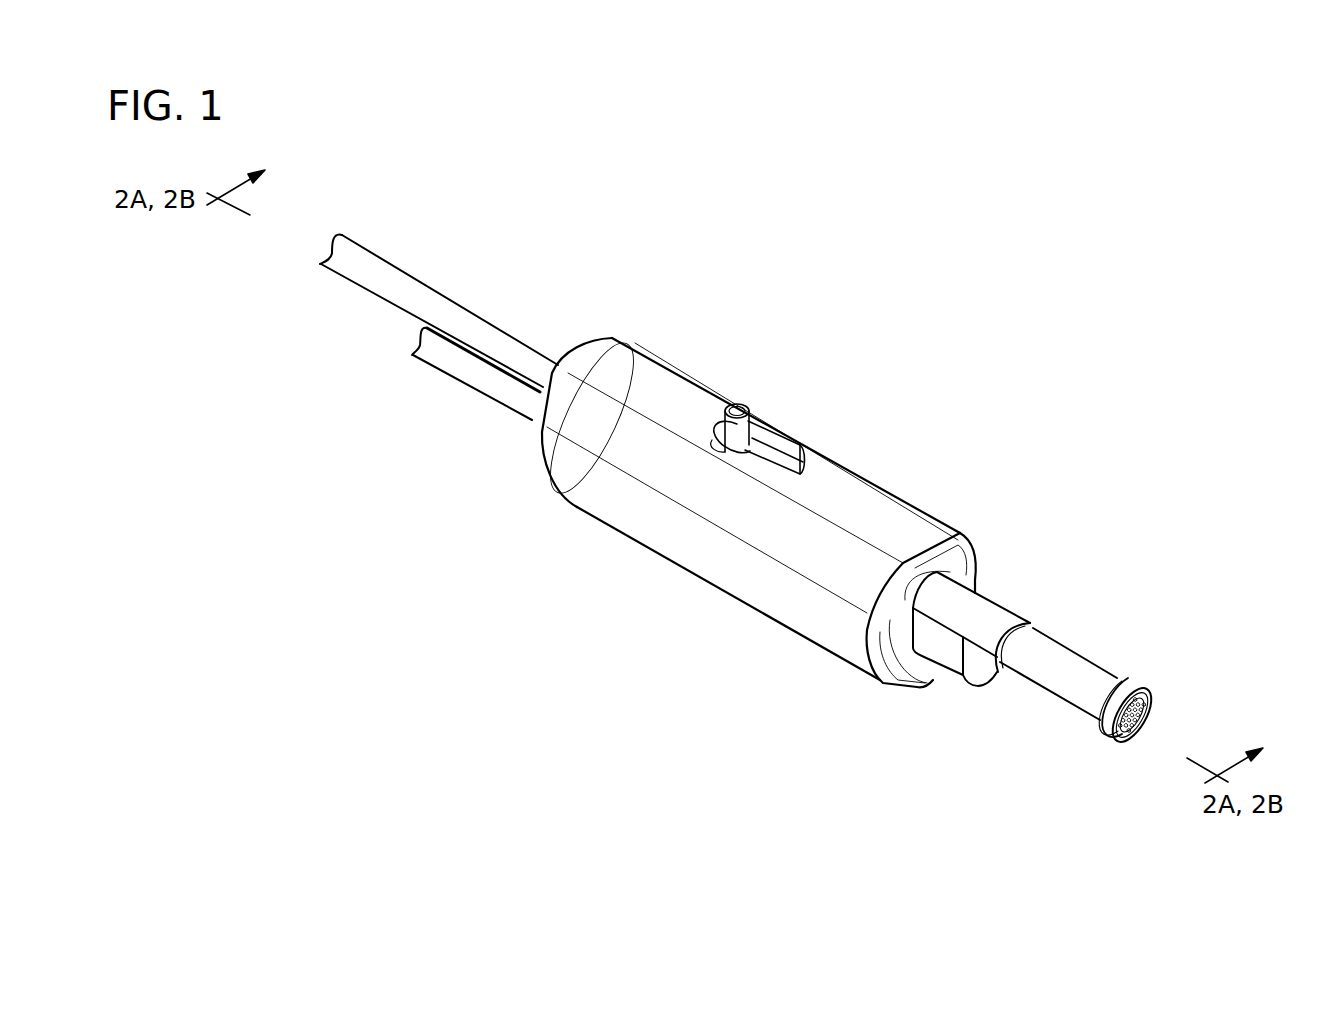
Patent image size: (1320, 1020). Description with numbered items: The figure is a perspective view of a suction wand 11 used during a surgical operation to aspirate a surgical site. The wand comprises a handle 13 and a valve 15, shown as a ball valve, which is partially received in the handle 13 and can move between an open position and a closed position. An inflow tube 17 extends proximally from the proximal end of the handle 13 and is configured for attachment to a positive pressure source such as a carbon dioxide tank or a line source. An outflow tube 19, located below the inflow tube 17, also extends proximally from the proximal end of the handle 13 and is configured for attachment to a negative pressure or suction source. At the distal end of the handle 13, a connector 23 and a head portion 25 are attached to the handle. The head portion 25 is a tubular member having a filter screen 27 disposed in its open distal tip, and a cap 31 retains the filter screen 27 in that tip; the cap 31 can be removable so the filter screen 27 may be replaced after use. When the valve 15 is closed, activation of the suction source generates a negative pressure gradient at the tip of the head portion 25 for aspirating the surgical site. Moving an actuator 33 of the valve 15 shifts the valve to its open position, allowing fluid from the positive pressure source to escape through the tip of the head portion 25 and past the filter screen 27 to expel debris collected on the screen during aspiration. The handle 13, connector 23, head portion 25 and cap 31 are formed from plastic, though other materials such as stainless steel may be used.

The suction wand 11 is at (986, 256).
The handle 13 is at (707, 552).
The valve 15 is at (754, 391).
The inflow tube 17 is at (463, 327).
The outflow tube 19 is at (465, 364).
The connector 23 is at (1014, 593).
The head portion 25 is at (1092, 641).
The filter screen 27 is at (1152, 717).
The cap 31 is at (1112, 729).
The actuator 33 is at (773, 434).